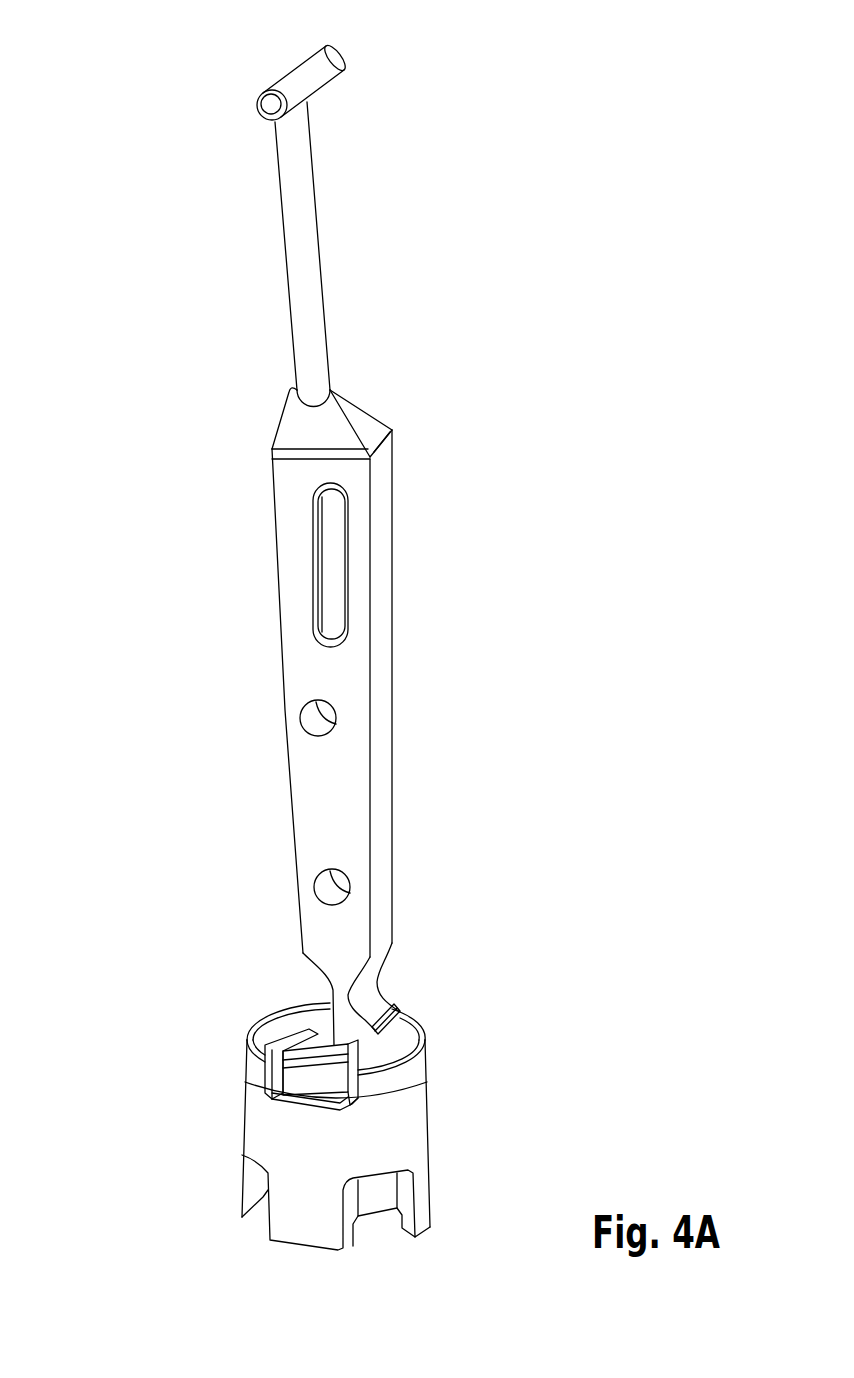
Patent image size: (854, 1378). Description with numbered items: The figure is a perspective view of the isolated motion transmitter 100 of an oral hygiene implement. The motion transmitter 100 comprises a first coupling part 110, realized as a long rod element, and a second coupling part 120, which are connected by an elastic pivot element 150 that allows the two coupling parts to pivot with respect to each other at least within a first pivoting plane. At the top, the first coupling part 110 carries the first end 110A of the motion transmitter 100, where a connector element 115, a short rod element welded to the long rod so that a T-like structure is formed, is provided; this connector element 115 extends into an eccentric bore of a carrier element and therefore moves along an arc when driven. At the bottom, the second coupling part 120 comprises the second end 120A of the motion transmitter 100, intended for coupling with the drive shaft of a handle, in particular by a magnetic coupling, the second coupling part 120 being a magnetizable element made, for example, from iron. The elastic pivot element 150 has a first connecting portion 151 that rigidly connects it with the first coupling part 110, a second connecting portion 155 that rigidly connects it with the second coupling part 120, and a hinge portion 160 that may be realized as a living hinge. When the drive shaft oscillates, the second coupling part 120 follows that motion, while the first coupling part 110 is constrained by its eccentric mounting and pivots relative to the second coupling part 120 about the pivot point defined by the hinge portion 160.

The motion transmitter 100 is at (157, 205).
The first coupling part 110 is at (310, 292).
The first end 110A is at (340, 95).
The connector element 115 is at (335, 57).
The second coupling part 120 is at (378, 1200).
The second end 120A is at (245, 1235).
The elastic pivot element 150 is at (250, 806).
The first connecting portion 151 is at (383, 585).
The second connecting portion 155 is at (430, 1120).
The hinge portion 160 is at (400, 975).